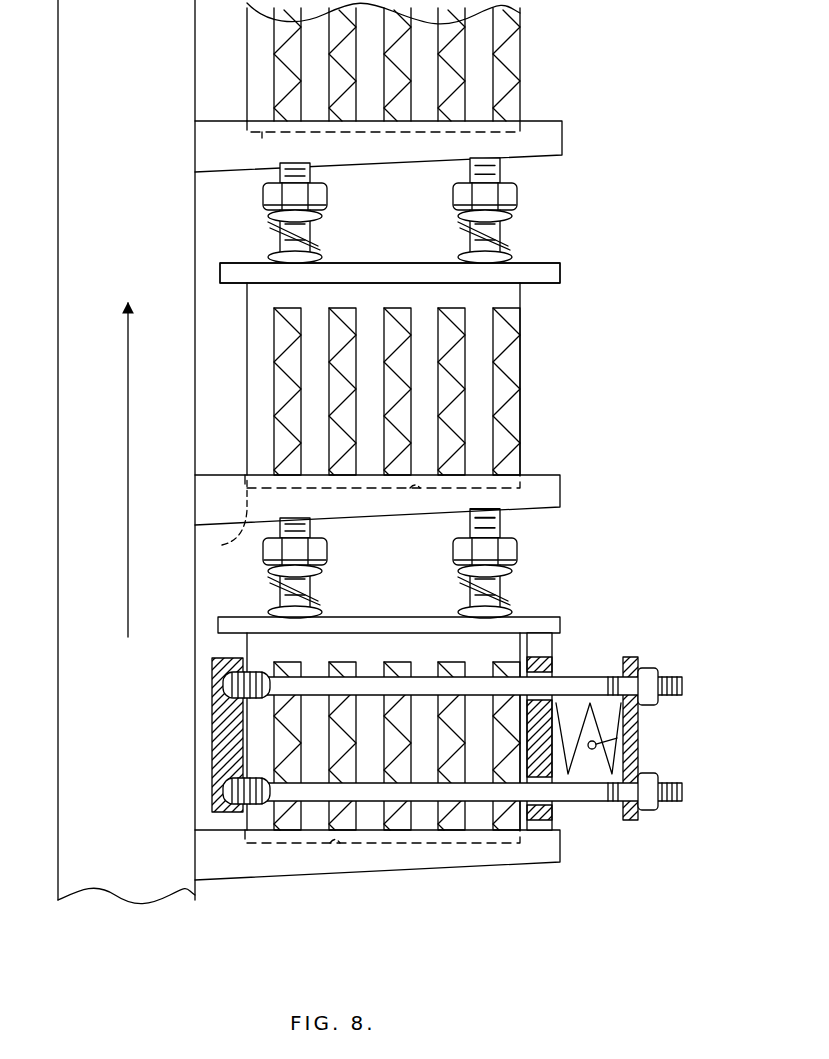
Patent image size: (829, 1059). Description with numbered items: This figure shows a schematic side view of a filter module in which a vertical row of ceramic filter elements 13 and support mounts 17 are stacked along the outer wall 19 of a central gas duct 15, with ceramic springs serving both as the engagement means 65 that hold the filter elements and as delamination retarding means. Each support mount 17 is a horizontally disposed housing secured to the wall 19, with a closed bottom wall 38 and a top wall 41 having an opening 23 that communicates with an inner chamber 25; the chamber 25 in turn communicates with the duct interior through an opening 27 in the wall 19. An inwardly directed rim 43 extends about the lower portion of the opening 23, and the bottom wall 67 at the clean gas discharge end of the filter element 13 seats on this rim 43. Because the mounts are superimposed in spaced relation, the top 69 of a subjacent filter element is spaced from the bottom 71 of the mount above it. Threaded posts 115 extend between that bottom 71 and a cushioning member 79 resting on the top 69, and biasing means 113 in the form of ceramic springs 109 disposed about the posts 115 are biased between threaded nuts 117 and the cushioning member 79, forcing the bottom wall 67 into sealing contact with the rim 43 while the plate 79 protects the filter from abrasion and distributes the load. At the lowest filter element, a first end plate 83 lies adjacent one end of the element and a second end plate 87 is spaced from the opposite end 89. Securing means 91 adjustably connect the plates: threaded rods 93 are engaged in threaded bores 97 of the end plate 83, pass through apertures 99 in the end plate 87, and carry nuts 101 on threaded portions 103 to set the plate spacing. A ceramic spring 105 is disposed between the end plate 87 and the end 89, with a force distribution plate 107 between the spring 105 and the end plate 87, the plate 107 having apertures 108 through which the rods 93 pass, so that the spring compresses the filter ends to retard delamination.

The ceramic filter element 13 is at (528, 60).
The central gas duct 15 is at (202, 240).
The support mount 17 is at (572, 133).
The outer wall 19 is at (82, 421).
The opening 23 is at (424, 488).
The inner chamber 25 is at (345, 508).
The opening 27 is at (185, 147).
The closed bottom wall 38 is at (415, 163).
The top wall 41 is at (222, 475).
The inwardly directed rim 43 is at (222, 545).
The engagement means 65 is at (533, 248).
The bottom wall 67 is at (262, 145).
The top 69 is at (386, 626).
The bottom 71 is at (373, 174).
The cushioning member 79 is at (224, 617).
The first end plate 83 is at (214, 748).
The second end plate 87 is at (632, 717).
The opposite end 89 is at (553, 650).
The securing means 91 is at (632, 627).
The threaded rods 93 is at (225, 712).
The threaded bores 97 is at (218, 666).
The apertures 99 is at (617, 810).
The nuts 101 is at (652, 770).
The threaded portions 103 is at (666, 804).
The ceramic spring 105 is at (632, 735).
The force distribution plate 107 is at (553, 822).
The apertures 108 is at (554, 808).
The ceramic spring 109 is at (320, 238).
The biasing means 113 is at (450, 232).
The threaded posts 115 is at (507, 187).
The threaded nuts 117 is at (516, 201).